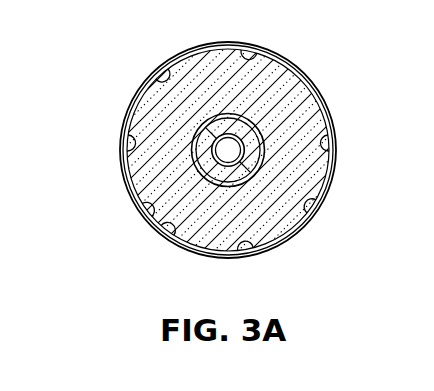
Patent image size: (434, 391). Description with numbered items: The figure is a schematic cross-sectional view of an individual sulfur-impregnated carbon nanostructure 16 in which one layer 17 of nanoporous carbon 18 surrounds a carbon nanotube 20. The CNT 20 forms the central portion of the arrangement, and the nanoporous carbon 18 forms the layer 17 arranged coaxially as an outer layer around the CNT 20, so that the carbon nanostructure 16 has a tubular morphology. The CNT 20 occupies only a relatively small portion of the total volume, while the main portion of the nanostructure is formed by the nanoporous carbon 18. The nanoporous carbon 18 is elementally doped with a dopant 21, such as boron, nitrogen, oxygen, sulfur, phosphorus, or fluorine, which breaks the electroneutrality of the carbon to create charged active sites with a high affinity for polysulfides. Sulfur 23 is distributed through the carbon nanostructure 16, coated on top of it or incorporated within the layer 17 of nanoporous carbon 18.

The sulfur-impregnated carbon nanostructure 16 is at (100, 84).
The layer of nanoporous carbon 17 is at (262, 92).
The nanoporous carbon 18 is at (296, 137).
The carbon nanotube 20 is at (255, 168).
The dopant 21 is at (166, 152).
The sulfur 23 is at (162, 70).